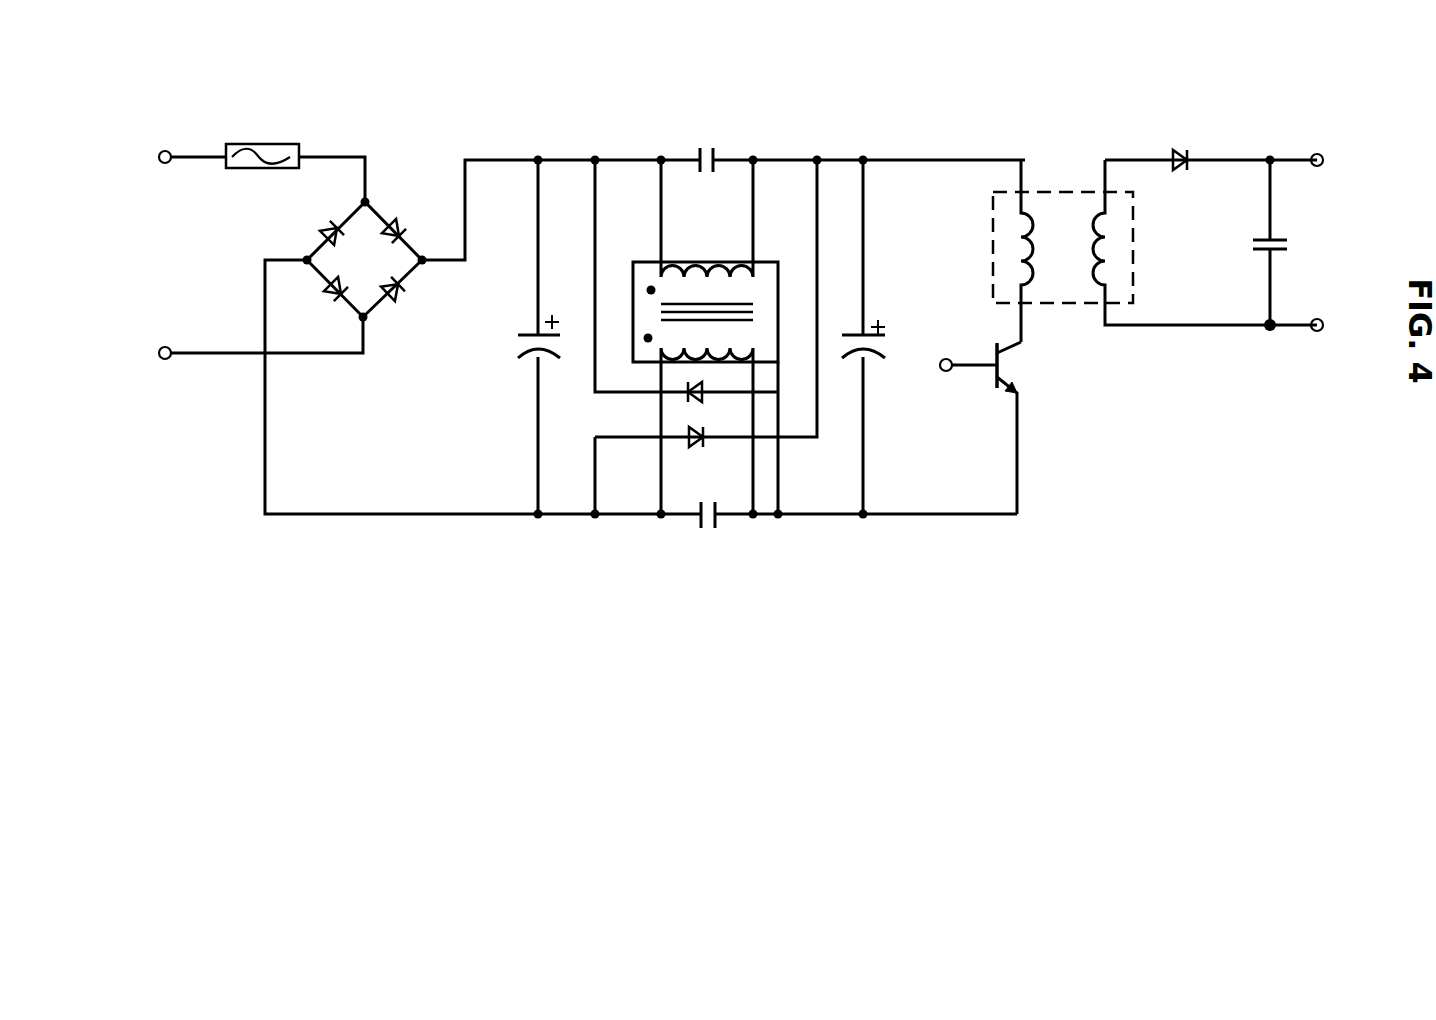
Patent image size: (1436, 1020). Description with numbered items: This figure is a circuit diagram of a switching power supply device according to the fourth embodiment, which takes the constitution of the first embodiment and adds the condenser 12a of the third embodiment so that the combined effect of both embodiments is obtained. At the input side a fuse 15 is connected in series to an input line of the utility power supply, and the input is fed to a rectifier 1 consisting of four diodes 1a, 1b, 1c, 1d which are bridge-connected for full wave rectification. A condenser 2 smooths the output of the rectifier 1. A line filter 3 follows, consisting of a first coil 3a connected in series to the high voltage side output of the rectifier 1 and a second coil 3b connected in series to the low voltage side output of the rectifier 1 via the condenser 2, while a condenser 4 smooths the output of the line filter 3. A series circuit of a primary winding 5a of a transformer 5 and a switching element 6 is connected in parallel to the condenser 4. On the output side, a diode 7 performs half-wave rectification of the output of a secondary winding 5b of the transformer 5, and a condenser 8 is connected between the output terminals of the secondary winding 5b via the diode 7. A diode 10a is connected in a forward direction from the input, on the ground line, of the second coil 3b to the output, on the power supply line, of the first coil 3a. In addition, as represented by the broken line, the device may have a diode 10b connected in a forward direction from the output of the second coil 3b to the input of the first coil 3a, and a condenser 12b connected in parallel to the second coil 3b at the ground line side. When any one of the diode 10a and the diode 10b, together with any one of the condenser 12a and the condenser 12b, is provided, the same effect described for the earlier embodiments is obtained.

The rectifier 1 is at (333, 249).
The diode 1a is at (323, 233).
The diode 1b is at (390, 217).
The diode 1c is at (337, 290).
The diode 1d is at (398, 297).
The condenser 2 is at (525, 347).
The line filter 3 is at (722, 337).
The first coil 3a is at (715, 292).
The second coil 3b is at (730, 338).
The condenser 4 is at (868, 348).
The transformer 5 is at (1116, 212).
The primary winding 5a is at (1023, 248).
The secondary winding 5b is at (1100, 250).
The switching element 6 is at (1008, 365).
The diode 7 is at (1180, 148).
The condenser 8 is at (1263, 248).
The diode 10a is at (692, 442).
The diode 10b is at (683, 398).
The condenser 12a is at (708, 158).
The condenser 12b is at (707, 520).
The fuse 15 is at (275, 142).